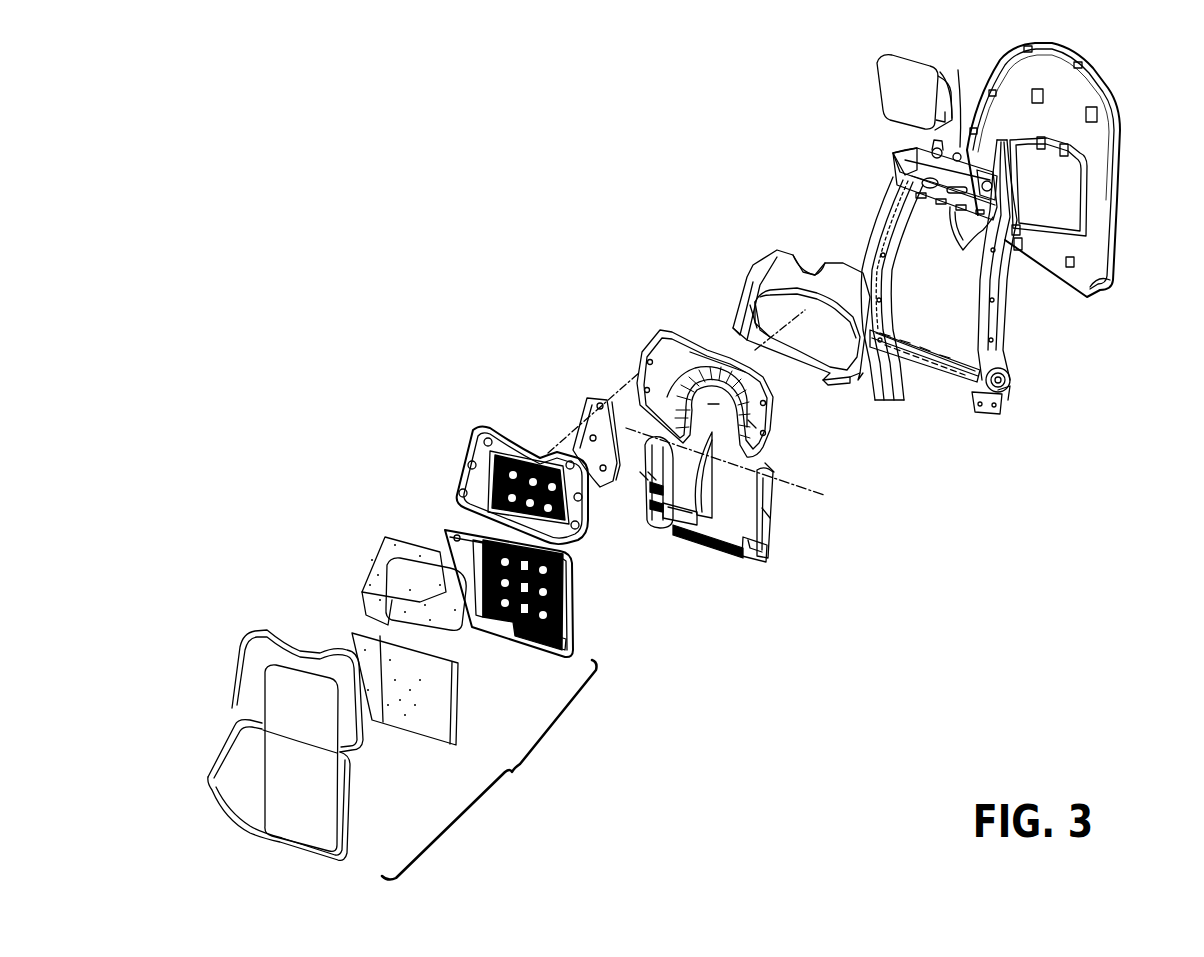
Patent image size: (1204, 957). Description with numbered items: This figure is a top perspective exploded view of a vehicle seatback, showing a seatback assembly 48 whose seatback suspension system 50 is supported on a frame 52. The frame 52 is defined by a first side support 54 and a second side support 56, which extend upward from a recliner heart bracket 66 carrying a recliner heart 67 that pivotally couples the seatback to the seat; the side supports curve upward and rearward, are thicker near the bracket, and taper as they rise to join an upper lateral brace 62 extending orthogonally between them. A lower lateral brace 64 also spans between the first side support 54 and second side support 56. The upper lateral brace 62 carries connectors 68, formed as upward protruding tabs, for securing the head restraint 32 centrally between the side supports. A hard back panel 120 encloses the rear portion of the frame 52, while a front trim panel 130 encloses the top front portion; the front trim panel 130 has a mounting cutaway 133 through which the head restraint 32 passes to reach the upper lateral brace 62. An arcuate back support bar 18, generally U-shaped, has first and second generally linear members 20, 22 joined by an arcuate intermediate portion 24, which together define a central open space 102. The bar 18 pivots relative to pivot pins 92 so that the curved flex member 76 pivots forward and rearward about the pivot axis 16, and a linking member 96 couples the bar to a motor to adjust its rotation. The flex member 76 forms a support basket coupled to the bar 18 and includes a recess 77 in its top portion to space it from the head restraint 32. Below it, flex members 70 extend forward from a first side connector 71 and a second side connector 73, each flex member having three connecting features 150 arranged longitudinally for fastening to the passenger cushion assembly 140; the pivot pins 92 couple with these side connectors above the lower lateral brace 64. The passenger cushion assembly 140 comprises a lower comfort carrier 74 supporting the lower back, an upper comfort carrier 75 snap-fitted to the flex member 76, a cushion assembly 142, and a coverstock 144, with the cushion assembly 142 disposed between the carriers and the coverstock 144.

The pivot axis 16 is at (805, 485).
The arcuate back support bar 18 is at (767, 470).
The first generally linear member 20 is at (603, 395).
The second generally linear member 22 is at (770, 468).
The arcuate intermediate portion 24 is at (752, 425).
The head restraint 32 is at (895, 73).
The seatback assembly 48 is at (437, 261).
The seatback suspension system 50 is at (541, 394).
The frame 52 is at (1037, 358).
The first side support 54 is at (871, 228).
The second side support 56 is at (1000, 312).
The upper lateral brace 62 is at (895, 157).
The lower lateral brace 64 is at (933, 370).
The recliner heart bracket 66 is at (1007, 393).
The recliner heart 67 is at (1010, 377).
The connectors 68 is at (940, 148).
The flex members 70 is at (593, 397).
The first side connector 71 is at (647, 477).
The second side connector 73 is at (767, 513).
The lower comfort carrier 74 is at (528, 643).
The upper comfort carrier 75 is at (473, 477).
The flex member 76 is at (653, 346).
The recess 77 is at (693, 352).
The pivot pins 92 is at (695, 508).
The linking member 96 is at (652, 475).
The central open space 102 is at (713, 403).
The hard back panel 120 is at (1113, 196).
The front trim panel 130 is at (767, 280).
The mounting cutaway 133 is at (818, 278).
The passenger cushion assembly 140 is at (489, 770).
The cushion assembly 142 is at (423, 710).
The coverstock 144 is at (240, 768).
The connecting features 150 is at (573, 433).